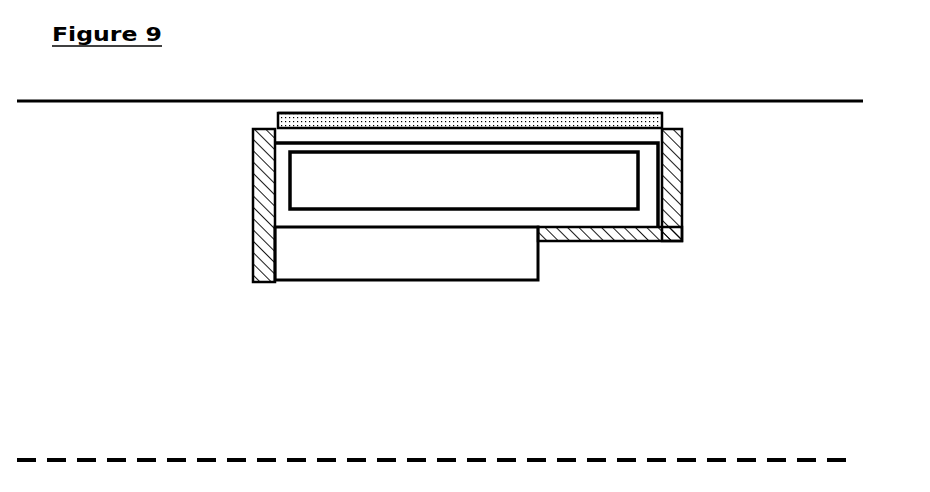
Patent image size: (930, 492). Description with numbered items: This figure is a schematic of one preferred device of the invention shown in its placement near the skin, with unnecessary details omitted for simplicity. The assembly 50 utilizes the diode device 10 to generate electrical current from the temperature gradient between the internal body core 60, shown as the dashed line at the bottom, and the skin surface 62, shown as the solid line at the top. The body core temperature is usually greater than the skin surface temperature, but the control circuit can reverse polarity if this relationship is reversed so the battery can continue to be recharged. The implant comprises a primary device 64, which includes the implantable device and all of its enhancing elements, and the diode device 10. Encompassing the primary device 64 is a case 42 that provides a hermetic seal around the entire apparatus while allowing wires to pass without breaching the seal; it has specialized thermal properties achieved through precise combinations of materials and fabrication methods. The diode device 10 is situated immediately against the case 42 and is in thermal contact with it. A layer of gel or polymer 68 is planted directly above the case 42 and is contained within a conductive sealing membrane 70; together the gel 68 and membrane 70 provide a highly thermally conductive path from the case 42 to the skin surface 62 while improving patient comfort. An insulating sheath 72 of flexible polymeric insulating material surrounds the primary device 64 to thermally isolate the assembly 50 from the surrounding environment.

The skin surface 62 is at (440, 63).
The layer of gel or polymer 68 is at (333, 120).
The conductive sealing membrane 70 is at (482, 110).
The insulating sheath 72 is at (255, 172).
The case 42 is at (683, 229).
The primary device 64 is at (553, 208).
The diode device 10 is at (293, 277).
The assembly 50 is at (730, 274).
The internal body core 60 is at (690, 458).